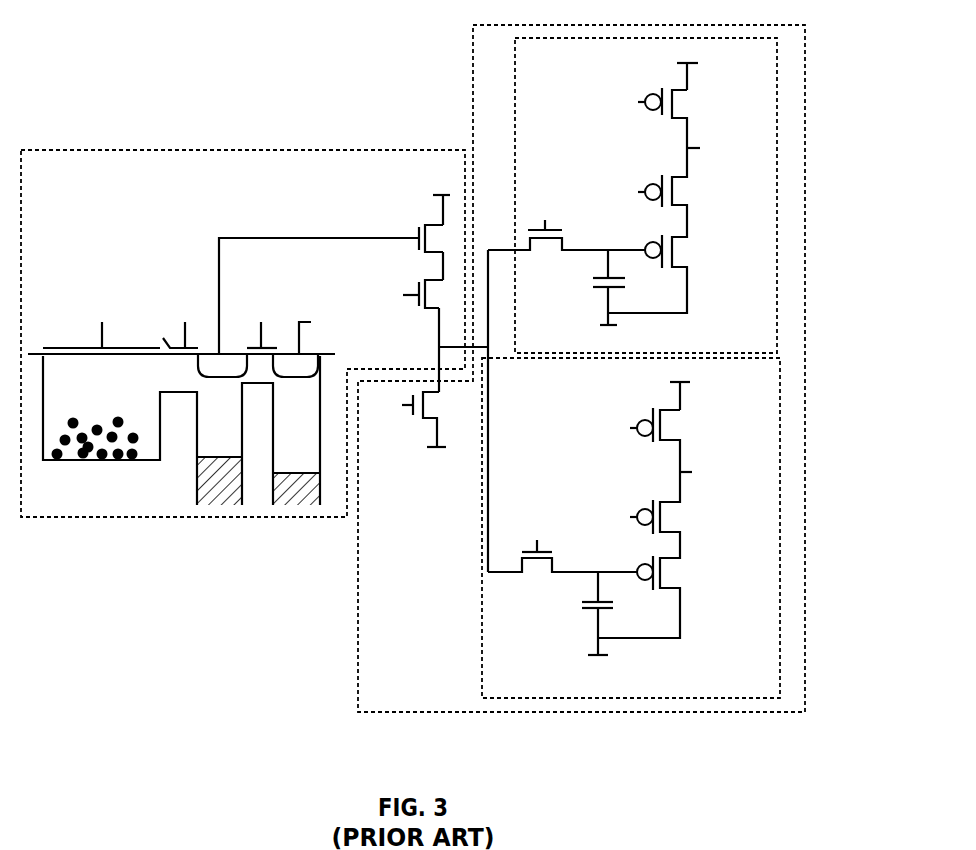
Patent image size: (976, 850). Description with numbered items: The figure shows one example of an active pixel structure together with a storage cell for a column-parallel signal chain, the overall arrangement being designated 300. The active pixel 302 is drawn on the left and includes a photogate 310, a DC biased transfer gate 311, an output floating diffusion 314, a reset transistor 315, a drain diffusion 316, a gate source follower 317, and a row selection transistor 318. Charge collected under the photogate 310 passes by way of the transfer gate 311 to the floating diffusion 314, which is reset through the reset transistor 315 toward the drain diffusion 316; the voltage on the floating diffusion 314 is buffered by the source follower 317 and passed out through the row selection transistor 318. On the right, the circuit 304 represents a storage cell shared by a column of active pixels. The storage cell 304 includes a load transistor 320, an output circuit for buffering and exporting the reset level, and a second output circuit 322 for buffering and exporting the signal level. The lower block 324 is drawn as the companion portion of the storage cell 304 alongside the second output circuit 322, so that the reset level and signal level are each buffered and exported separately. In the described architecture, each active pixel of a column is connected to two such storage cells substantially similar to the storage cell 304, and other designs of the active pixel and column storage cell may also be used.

The active pixel sensor circuit 300 is at (150, 616).
The active pixel 302 is at (243, 317).
The storage cell 304 is at (613, 368).
The photogate 310 is at (94, 321).
The DC biased transfer gate 311 is at (198, 326).
The output floating diffusion 314 is at (189, 371).
The reset transistor 315 is at (296, 316).
The drain diffusion 316 is at (297, 377).
The gate source follower 317 is at (400, 226).
The row selection transistor 318 is at (400, 283).
The load transistor 320 is at (404, 437).
The second output circuit 322 is at (673, 195).
The reset sample and hold circuit 324 is at (671, 527).